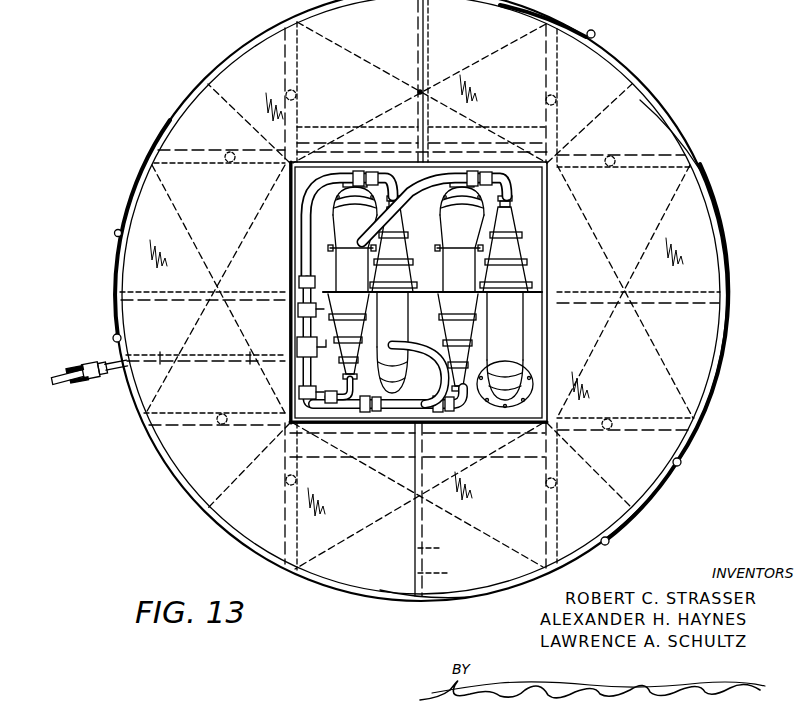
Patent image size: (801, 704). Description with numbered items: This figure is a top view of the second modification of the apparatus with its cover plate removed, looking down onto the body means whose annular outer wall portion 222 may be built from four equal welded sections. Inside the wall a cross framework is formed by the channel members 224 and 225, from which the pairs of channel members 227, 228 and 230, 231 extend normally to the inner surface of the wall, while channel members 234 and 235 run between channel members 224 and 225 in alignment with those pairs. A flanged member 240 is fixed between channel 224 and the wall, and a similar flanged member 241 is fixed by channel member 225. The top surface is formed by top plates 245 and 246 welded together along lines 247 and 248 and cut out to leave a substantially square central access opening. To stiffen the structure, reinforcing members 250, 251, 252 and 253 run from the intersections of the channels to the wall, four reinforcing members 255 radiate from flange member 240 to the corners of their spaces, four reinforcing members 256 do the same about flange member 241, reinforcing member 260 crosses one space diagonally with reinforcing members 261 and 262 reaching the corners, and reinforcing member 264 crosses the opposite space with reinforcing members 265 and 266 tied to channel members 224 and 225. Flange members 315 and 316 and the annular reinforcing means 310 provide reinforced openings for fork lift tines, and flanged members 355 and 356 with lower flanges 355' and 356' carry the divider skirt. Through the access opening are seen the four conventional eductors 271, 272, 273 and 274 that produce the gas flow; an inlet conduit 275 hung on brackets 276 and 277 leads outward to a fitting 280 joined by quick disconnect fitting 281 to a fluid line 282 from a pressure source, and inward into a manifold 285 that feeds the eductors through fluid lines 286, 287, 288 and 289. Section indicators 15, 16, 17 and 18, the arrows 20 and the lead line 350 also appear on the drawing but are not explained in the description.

The section line 15- 15 is at (413, 604).
The section line 16- 16 is at (122, 400).
The section line 17- 17 is at (281, 297).
The section line 18- 18 is at (318, 595).
The flow direction arrows / pipe manifold 20 is at (412, 301).
The annular outer wall portion 222 is at (147, 162).
The channel member 224 is at (298, 78).
The channel member 225 is at (558, 83).
The channel member 227 is at (195, 427).
The channel member 228 is at (183, 157).
The channel member 230 is at (612, 428).
The channel member 231 is at (667, 165).
The channel member 234 is at (338, 426).
The channel member 235 is at (494, 158).
The flanged member 240 is at (143, 294).
The flanged member 241 is at (652, 298).
The top plate 245 is at (262, 57).
The top plate 246 is at (664, 134).
The weld line 247 is at (424, 33).
The weld line 248 is at (446, 548).
The reinforcing member 250 is at (255, 460).
The reinforcing member 251 is at (583, 462).
The reinforcing member 252 is at (594, 122).
The reinforcing member 253 is at (242, 97).
The reinforcing members 255 is at (259, 233).
The reinforcing members 256 is at (600, 245).
The reinforcing member 260 is at (352, 527).
The reinforcing member 261 is at (373, 465).
The reinforcing member 262 is at (462, 518).
The reinforcing member 264 is at (322, 38).
The reinforcing member 265 is at (380, 116).
The reinforcing member 266 is at (480, 60).
The eductor 271 is at (322, 234).
The eductor 272 is at (412, 247).
The eductor 273 is at (440, 282).
The eductor 274 is at (523, 232).
The inlet conduit 275 is at (200, 362).
The bracket 276 is at (160, 358).
The bracket 277 is at (249, 362).
The fitting 280 is at (104, 374).
The quick disconnect fitting 281 is at (86, 362).
The fluid line 282 is at (62, 383).
The manifold 285 is at (294, 353).
The fluid line 286 is at (345, 425).
The fluid line 287 is at (312, 190).
The fluid line 288 is at (325, 425).
The fluid line 289 is at (420, 196).
The annular reinforcing means 310 is at (508, 585).
The flange member 315 is at (471, 509).
The flange member 316 is at (330, 140).
The enclosure side section 350 is at (718, 364).
The flanged member 355 is at (396, 539).
The laterally extending flange 355' is at (453, 573).
The flanged member 356 is at (400, 65).
The flange 356' is at (419, 93).